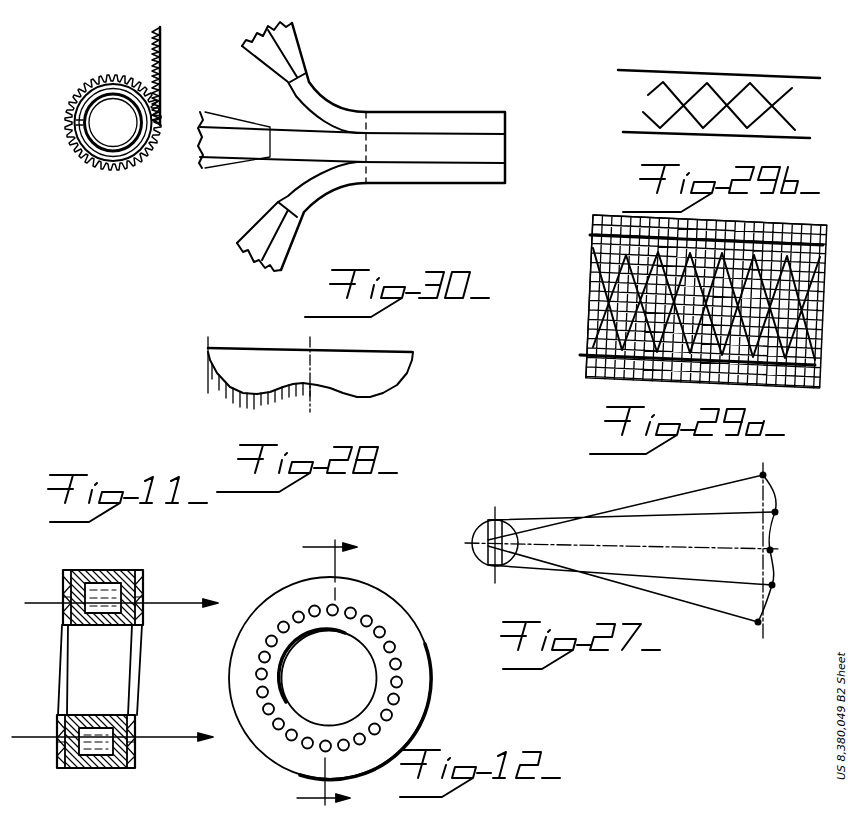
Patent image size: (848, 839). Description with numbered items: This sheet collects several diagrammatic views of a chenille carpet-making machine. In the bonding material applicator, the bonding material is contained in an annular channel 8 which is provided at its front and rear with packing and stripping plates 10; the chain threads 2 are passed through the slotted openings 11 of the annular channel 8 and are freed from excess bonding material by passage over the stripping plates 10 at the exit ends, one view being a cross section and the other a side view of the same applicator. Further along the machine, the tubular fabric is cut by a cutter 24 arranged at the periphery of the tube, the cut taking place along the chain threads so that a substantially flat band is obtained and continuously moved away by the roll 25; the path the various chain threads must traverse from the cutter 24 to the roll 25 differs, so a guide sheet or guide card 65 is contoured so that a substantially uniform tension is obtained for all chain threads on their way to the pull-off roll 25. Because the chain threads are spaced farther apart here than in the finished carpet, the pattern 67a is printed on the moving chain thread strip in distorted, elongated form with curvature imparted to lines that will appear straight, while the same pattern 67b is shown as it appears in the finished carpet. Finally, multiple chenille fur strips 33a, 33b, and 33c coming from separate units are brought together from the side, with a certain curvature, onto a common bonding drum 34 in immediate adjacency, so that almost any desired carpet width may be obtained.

In FIG. 11, the chain threads 2 is at (170, 600).
In FIG. 11, the annular channel 8 is at (101, 572).
In FIG. 11, the packing and stripping plates 10 is at (63, 613).
In FIG. 11, the slotted openings 11 is at (63, 596).
In FIG. 12, the slotted openings 11 is at (338, 604).
In FIG. 27, the cutter 24 is at (478, 553).
In FIG. 27, the roll 25 is at (763, 497).
In FIG. 30, the chenille fur strip 33a is at (312, 206).
In FIG. 30, the chenille fur strip 33b is at (292, 152).
In FIG. 30, the chenille fur strip 33c is at (318, 92).
In FIG. 30, the bonding drum 34 is at (490, 111).
In FIG. 28, the guide card 65 is at (368, 383).
In FIG. 29A, the pattern 67a is at (595, 325).
In FIG. 29B, the pattern 67b is at (761, 92).